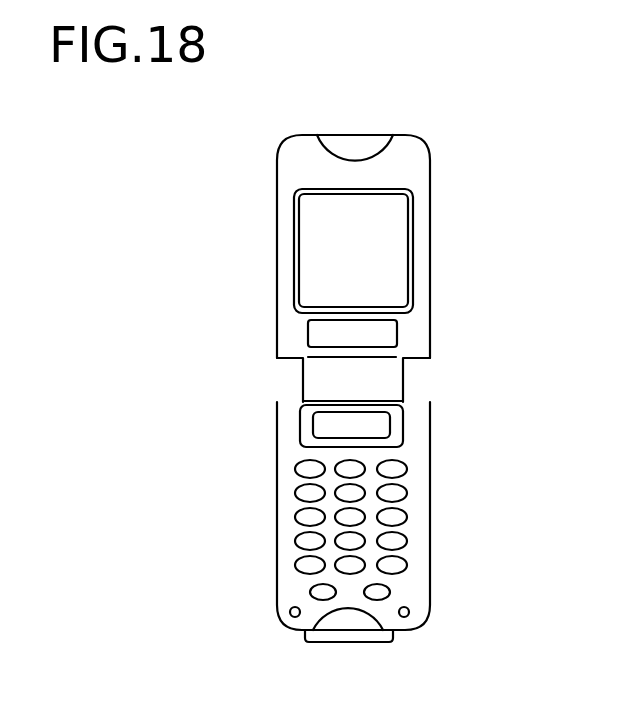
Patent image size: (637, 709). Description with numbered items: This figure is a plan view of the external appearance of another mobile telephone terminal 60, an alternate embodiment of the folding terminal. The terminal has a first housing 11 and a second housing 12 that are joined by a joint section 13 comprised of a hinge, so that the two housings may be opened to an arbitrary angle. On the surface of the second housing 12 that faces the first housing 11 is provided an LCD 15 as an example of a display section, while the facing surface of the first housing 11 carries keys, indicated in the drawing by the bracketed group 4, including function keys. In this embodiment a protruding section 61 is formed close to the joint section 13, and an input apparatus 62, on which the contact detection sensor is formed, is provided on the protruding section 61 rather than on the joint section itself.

The mobile telephone terminal 60 is at (375, 75).
The second housing 12 is at (430, 210).
The LCD 15 is at (315, 238).
The joint section 13 is at (413, 376).
The protruding section 61 is at (320, 423).
The input apparatus 62 is at (400, 424).
The first housing 11 is at (430, 480).
The key buttons 4 is at (270, 457).